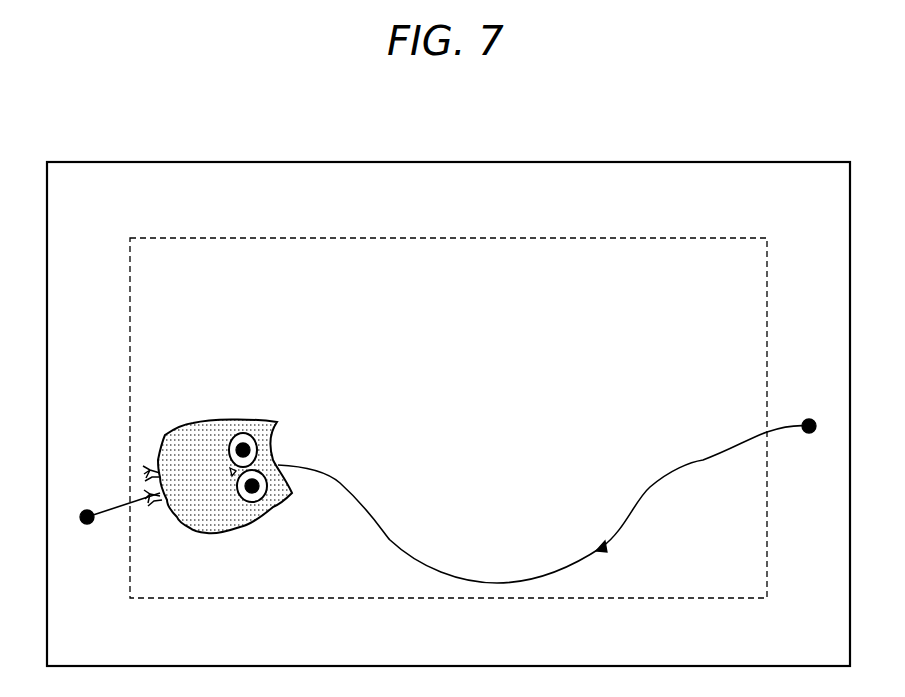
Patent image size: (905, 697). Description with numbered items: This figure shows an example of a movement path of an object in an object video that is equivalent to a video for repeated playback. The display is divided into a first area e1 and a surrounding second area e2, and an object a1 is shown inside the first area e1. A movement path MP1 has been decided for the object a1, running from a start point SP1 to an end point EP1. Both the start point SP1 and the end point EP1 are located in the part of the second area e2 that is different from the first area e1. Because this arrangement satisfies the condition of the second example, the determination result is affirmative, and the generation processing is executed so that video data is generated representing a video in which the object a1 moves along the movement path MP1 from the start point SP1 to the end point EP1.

The first area e1 is at (312, 297).
The second area e2 is at (416, 215).
The object a1 is at (224, 418).
The movement path MP1 is at (340, 483).
The start point SP1 is at (87, 524).
The end point EP1 is at (810, 433).